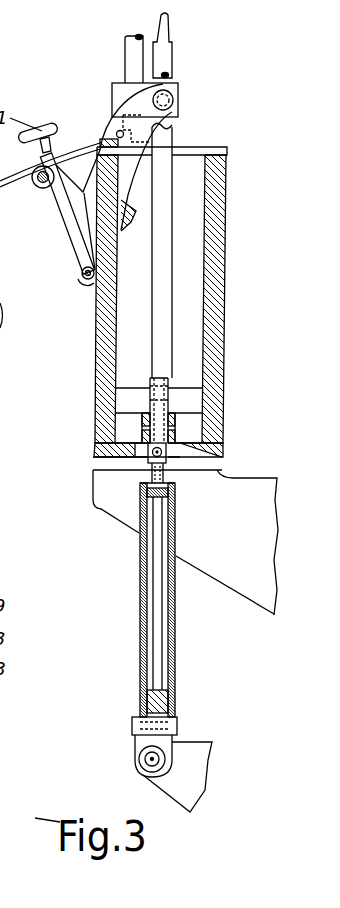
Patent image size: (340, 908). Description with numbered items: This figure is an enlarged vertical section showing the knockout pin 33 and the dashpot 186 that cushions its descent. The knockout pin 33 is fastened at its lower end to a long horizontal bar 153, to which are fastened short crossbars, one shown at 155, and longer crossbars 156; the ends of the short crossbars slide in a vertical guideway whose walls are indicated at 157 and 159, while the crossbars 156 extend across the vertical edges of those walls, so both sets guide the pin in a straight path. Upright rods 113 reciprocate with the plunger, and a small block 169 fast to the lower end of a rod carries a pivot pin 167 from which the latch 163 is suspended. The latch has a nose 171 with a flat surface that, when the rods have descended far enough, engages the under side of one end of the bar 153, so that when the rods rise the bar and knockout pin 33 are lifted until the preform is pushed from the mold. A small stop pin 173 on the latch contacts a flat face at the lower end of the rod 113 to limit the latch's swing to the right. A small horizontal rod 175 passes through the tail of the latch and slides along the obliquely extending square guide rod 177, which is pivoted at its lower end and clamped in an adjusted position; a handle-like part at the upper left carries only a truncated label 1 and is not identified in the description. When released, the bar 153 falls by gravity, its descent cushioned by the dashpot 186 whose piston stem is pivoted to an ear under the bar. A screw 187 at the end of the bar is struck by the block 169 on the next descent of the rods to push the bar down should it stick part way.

The handle 1 is at (37, 137).
The knockout pin 33 is at (171, 58).
The rods 113 is at (133, 43).
The long horizontal bar 153 is at (177, 420).
The crossbar 155 is at (122, 427).
The crossbar 156 is at (196, 400).
The guideway wall 157 is at (97, 336).
The guideway wall 159 is at (214, 303).
The latch 163 is at (82, 189).
The pivot pin 167 is at (175, 100).
The block 169 is at (118, 86).
The nose 171 is at (128, 233).
The stop pin 173 is at (116, 132).
The horizontal rod 175 is at (40, 190).
The guide rod 177 is at (72, 243).
The dashpot 186 is at (176, 642).
The screw 187 is at (166, 378).